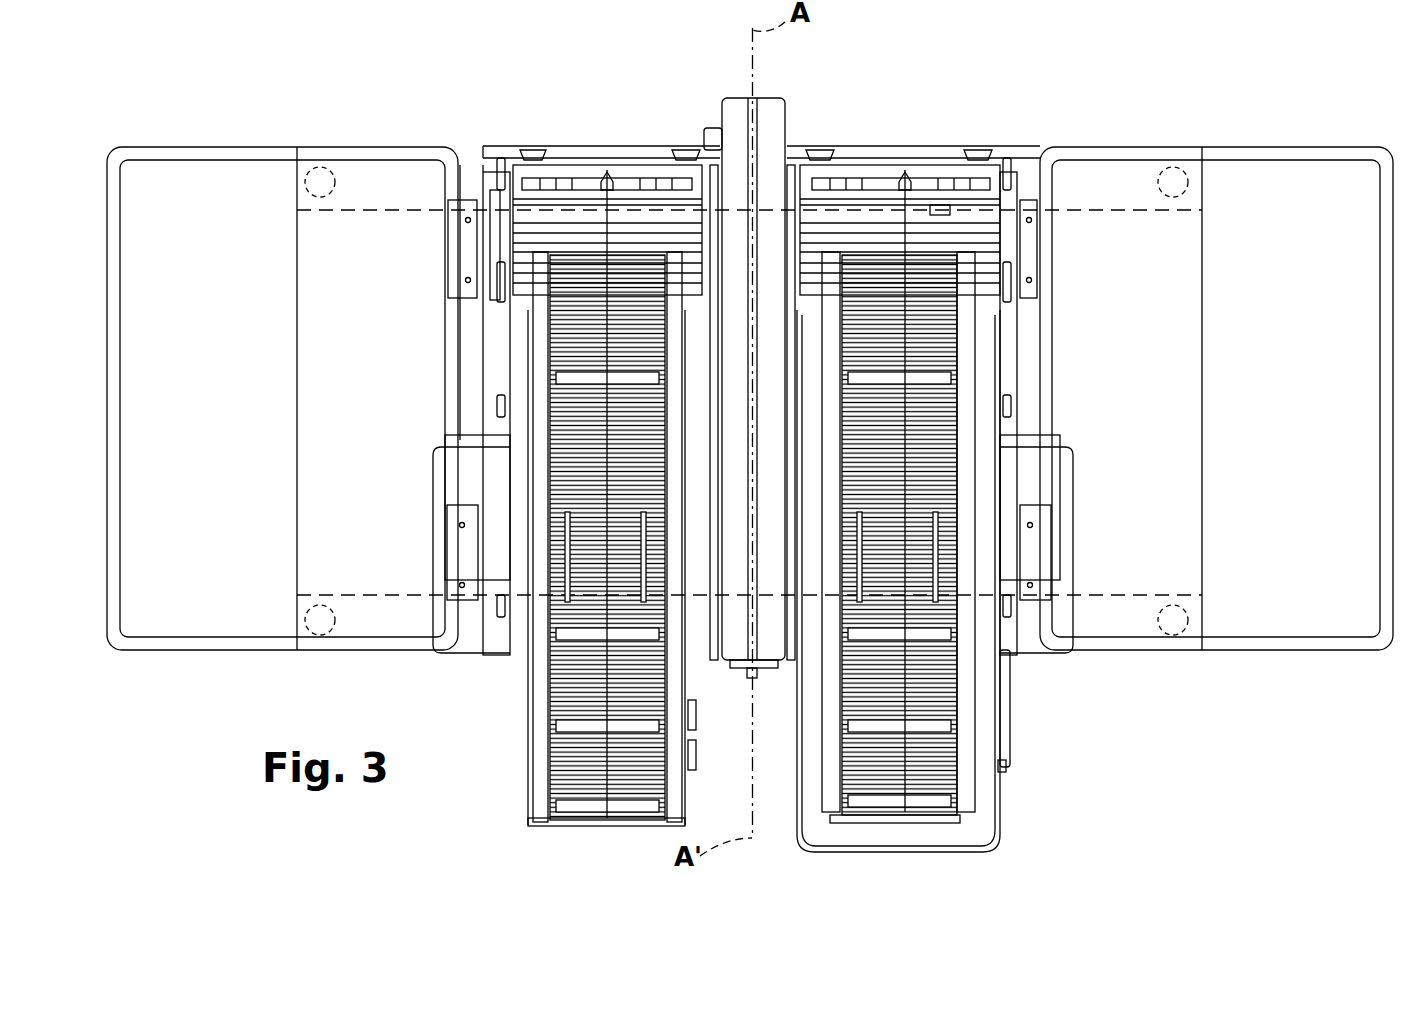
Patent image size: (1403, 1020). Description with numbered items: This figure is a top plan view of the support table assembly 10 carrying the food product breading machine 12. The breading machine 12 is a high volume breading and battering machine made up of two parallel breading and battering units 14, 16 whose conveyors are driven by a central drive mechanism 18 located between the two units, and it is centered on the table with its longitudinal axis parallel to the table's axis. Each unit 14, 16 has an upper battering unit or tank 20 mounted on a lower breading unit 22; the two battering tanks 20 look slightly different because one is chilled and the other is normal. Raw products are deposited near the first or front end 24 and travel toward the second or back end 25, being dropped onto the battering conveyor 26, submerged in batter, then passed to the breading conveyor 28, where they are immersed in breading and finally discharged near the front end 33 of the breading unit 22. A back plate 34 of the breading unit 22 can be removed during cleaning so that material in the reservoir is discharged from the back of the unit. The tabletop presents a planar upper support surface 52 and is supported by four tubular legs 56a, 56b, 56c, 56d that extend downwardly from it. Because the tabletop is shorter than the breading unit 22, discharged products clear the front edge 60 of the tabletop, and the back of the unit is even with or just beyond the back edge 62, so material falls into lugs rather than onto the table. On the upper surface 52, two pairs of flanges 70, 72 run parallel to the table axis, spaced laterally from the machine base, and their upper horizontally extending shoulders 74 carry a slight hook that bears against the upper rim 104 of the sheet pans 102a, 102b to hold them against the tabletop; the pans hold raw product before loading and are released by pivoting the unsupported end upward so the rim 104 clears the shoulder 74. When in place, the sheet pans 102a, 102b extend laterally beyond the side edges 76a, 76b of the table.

The support table assembly 10 is at (1043, 108).
The food product breading machine 12 is at (792, 84).
The breading and battering unit 14 is at (902, 128).
The breading and battering unit 16 is at (607, 140).
The central drive mechanism 18 is at (730, 95).
The upper battering unit or tank 20 is at (968, 404).
The lower breading unit 22 is at (506, 222).
The first or front end 24 is at (920, 820).
The second or back end 25 is at (868, 136).
The battering conveyor 26 is at (918, 484).
The breading conveyor 28 is at (942, 212).
The front end of the breading unit 33 is at (692, 760).
The back plate 34 is at (978, 150).
The planar upper support surface 52 is at (470, 160).
The tubular leg 56a is at (1175, 655).
The tubular leg 56b is at (318, 652).
The tubular leg 56c is at (1175, 178).
The tubular leg 56d is at (322, 178).
The front edge of the tabletop 60 is at (1035, 660).
The back edge of the tabletop 62 is at (485, 150).
The flange 70 is at (1035, 260).
The flange 72 is at (465, 248).
The upper horizontally extending shoulder 74 is at (450, 282).
The side edge of the table 76a is at (1203, 448).
The side edge of the table 76b is at (296, 488).
The sheet pan 102a is at (1313, 398).
The sheet pan 102b is at (226, 398).
The upper rim of the sheet pan 104 is at (232, 122).